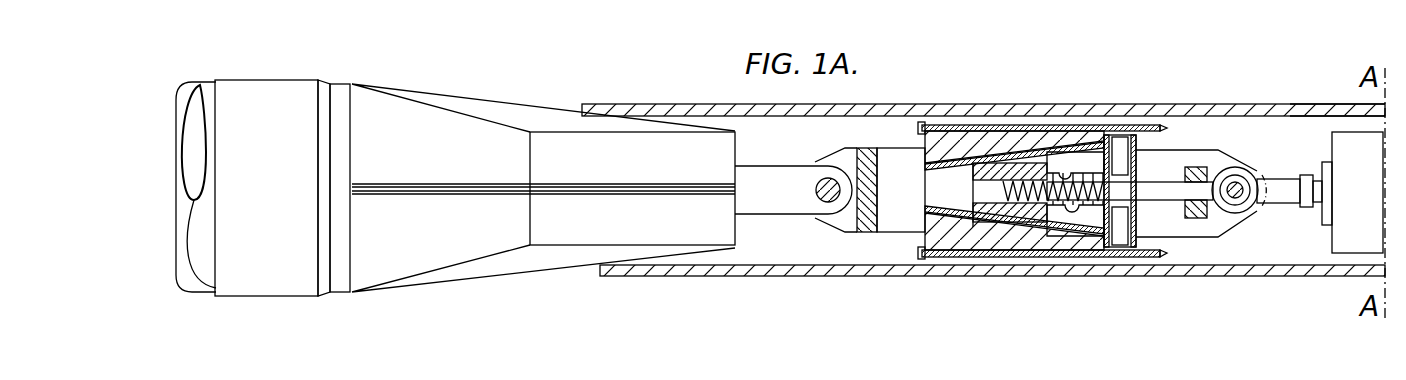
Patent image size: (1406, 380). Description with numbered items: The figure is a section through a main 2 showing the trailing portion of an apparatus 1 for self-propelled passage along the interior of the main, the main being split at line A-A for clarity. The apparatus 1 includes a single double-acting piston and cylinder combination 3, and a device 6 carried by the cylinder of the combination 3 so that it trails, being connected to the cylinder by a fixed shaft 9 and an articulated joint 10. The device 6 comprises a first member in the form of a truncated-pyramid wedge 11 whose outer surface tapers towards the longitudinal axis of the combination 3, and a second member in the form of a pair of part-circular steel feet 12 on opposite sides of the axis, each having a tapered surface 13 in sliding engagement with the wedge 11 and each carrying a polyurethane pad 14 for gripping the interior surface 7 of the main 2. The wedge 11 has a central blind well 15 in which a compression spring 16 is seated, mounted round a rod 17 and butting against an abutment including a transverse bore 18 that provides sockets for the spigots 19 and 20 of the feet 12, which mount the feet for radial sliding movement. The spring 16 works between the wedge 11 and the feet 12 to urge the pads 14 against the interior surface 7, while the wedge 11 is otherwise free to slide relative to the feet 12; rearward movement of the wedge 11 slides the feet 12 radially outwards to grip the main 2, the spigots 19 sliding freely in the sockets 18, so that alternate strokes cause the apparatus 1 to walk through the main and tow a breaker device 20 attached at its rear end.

The apparatus 1 is at (827, 145).
The main 2 is at (1250, 106).
The double-acting piston and cylinder combination 3 is at (1370, 205).
The device 6 is at (1001, 236).
The interior surface 7 is at (1312, 122).
The fixed shaft 9 is at (1283, 204).
The articulated joint 10 is at (1240, 184).
The wedge 11 is at (972, 203).
The feet 12 is at (955, 140).
The tapered surface 13 is at (1066, 153).
The polyurethane pad 14 is at (1050, 126).
The central blind well 15 is at (972, 180).
The compression spring 16 is at (1102, 124).
The rod 17 is at (1160, 185).
The transverse bore 18 is at (1137, 200).
The spigot 19 is at (1119, 157).
The spigot 20 is at (442, 159).